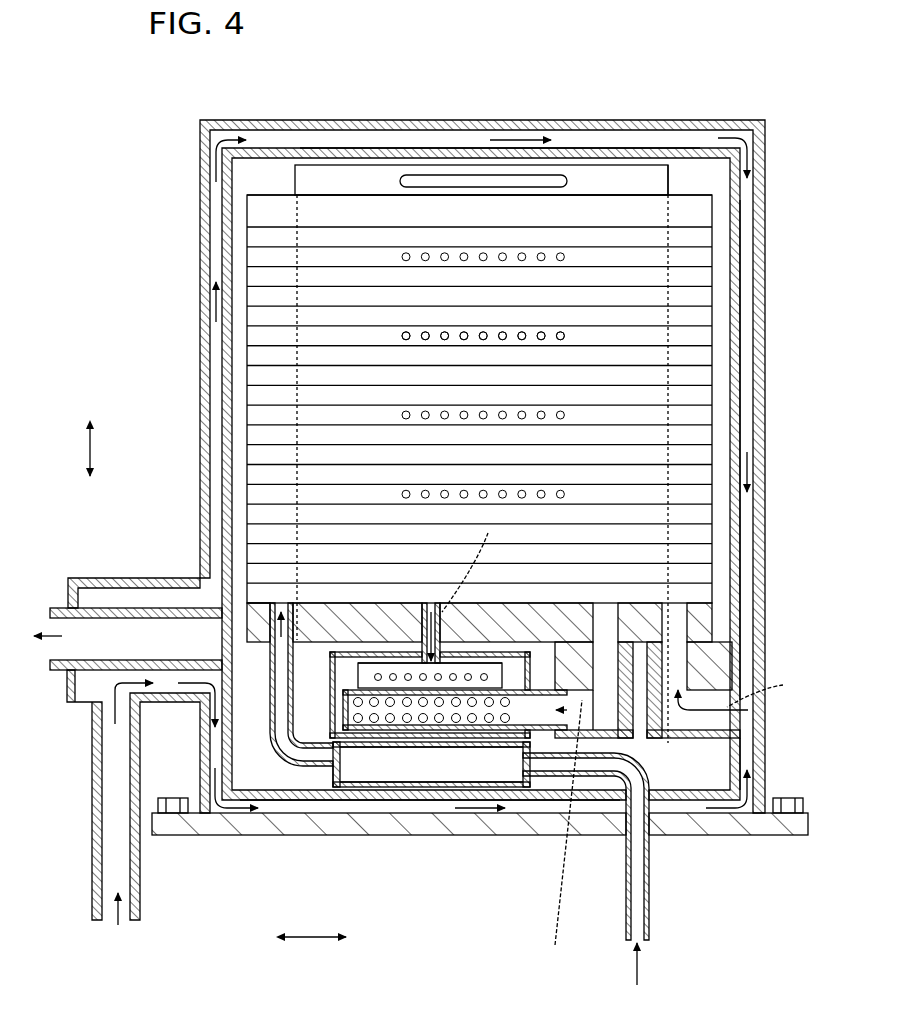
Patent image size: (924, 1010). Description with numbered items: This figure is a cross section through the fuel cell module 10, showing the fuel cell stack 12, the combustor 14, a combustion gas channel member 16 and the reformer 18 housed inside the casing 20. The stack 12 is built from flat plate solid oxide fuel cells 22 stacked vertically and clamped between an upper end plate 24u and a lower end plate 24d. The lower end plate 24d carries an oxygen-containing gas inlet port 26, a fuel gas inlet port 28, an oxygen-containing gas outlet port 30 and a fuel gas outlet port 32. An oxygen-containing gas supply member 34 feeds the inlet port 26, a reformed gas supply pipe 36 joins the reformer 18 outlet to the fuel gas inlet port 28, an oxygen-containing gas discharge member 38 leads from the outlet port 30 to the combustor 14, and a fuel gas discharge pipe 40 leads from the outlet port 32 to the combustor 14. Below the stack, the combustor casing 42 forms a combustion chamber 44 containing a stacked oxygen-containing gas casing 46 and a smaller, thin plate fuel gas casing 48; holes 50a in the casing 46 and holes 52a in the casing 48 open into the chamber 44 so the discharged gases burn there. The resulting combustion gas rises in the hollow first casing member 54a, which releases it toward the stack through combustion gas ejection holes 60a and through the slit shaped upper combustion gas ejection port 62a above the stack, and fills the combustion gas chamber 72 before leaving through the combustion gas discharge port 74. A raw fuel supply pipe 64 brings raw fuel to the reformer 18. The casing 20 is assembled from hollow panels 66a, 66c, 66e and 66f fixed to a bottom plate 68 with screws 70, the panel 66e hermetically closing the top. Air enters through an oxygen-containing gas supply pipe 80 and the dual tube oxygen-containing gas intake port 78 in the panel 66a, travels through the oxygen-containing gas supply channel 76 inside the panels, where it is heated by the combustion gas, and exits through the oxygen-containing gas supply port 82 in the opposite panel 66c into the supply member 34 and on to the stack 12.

The fuel cell module 10 is at (269, 77).
The fuel cell stack 12 is at (721, 318).
The combustor 14 is at (565, 706).
The combustion gas channel member 16 is at (676, 170).
The reformer 18 is at (490, 788).
The casing 20 is at (362, 118).
The fuel cell 22 is at (260, 353).
The upper end plate 24u is at (322, 207).
The lower end plate 24d is at (253, 645).
The oxygen-containing gas inlet port 26 is at (680, 624).
The fuel gas inlet port 28 is at (281, 603).
The oxygen-containing gas outlet port 30 is at (606, 612).
The fuel gas outlet port 32 is at (430, 603).
The oxygen-containing gas supply member 34 is at (690, 740).
The reformed gas supply pipe 36 is at (272, 752).
The oxygen-containing gas discharge member 38 is at (606, 716).
The fuel gas discharge pipe 40 is at (447, 606).
The combustor casing 42 is at (331, 690).
The combustion chamber 44 is at (345, 676).
The oxygen-containing gas casing 46 is at (405, 736).
The fuel gas casing 48 is at (497, 670).
The holes 50a is at (443, 708).
The holes 52a is at (390, 670).
The first casing member 54a is at (630, 167).
The combustion gas ejection holes 60a is at (492, 330).
The upper combustion gas ejection port 62a is at (481, 175).
The raw fuel supply pipe 64 is at (628, 905).
The panel 66a is at (206, 272).
The panel 66c is at (765, 240).
The panel 66e is at (396, 120).
The panel 66f is at (168, 814).
The bottom plate 68 is at (772, 828).
The screw 70 is at (787, 798).
The combustion gas chamber 72 is at (285, 782).
The combustion gas discharge port 74 is at (88, 605).
The oxygen-containing gas supply channel 76 is at (580, 140).
The oxygen-containing gas intake port 78 is at (168, 688).
The oxygen-containing gas supply pipe 80 is at (95, 890).
The oxygen-containing gas supply port 82 is at (734, 732).